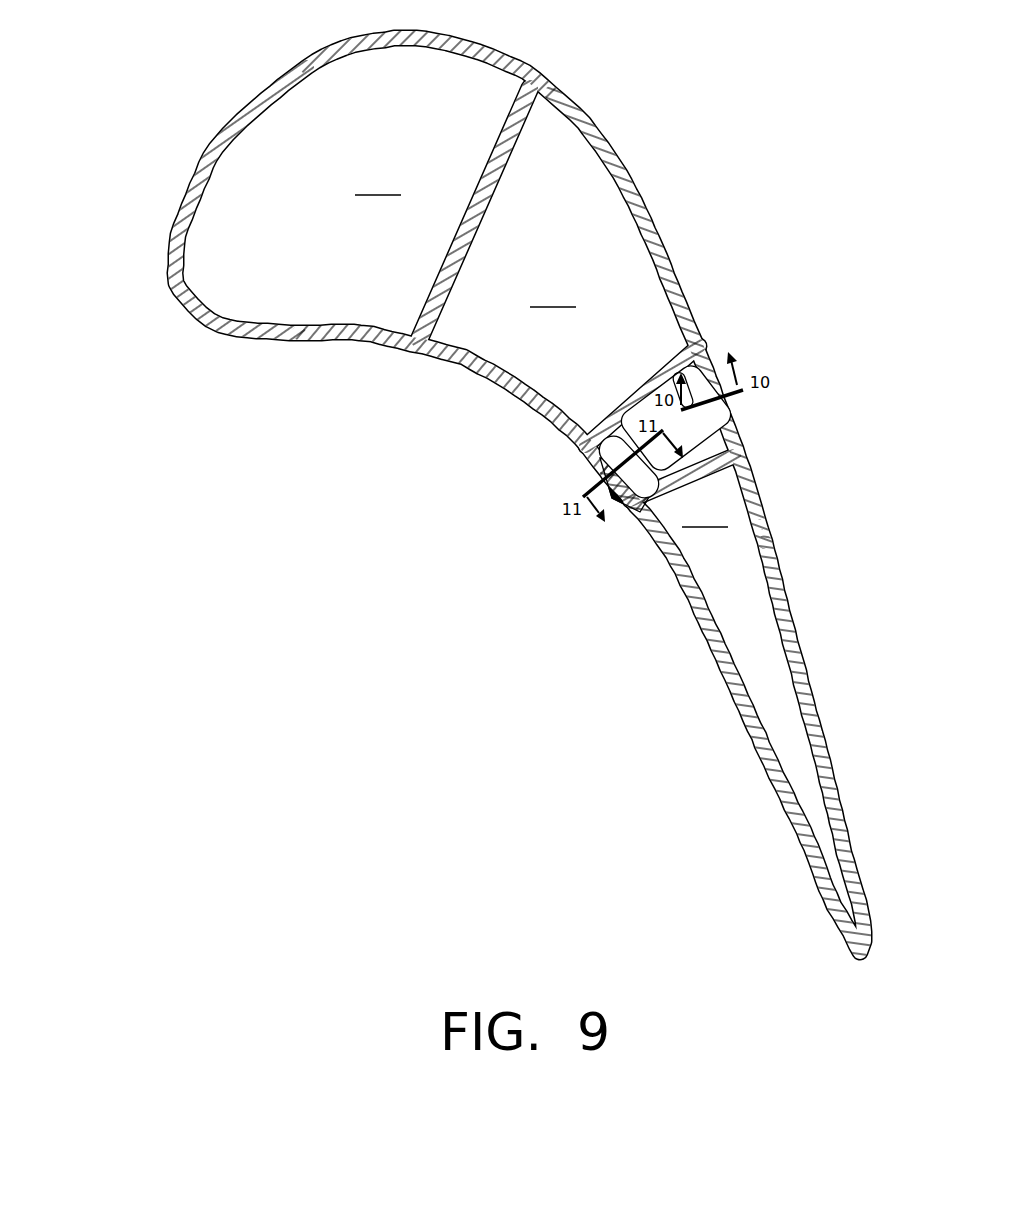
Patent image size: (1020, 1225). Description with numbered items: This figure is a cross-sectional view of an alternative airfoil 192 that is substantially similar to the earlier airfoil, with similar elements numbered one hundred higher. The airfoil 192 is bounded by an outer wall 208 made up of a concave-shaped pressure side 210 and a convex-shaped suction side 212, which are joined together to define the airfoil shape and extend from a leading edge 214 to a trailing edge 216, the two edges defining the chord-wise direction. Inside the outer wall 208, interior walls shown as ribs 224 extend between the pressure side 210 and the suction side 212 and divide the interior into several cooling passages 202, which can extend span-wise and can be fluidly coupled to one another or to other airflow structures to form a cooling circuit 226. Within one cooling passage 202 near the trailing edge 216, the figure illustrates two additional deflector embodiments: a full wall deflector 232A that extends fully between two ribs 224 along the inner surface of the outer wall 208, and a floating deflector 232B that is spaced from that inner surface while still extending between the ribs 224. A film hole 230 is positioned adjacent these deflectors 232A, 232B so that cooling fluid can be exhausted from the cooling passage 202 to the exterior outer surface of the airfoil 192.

The airfoil 192 is at (194, 120).
The cooling passage 202 is at (541, 349).
The outer wall 208 is at (647, 194).
The pressure side 210 is at (560, 440).
The suction side 212 is at (592, 117).
The leading edge 214 is at (175, 307).
The trailing edge 216 is at (860, 965).
The rib 224 is at (494, 193).
The cooling circuit 226 is at (327, 305).
The film hole 230 is at (722, 352).
The full wall deflector 232A is at (740, 430).
The floating deflector 232B is at (640, 530).